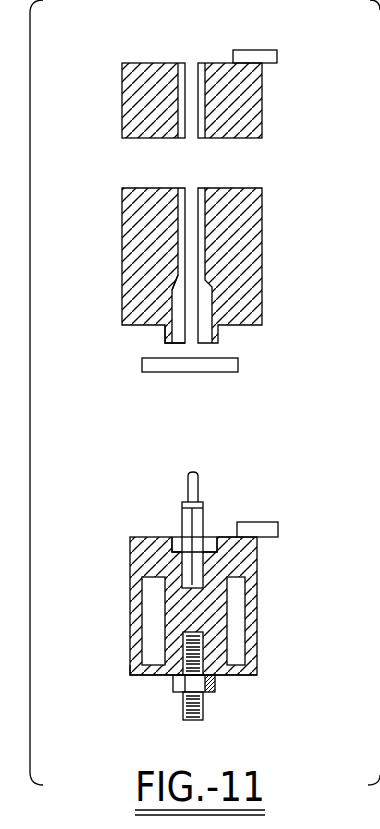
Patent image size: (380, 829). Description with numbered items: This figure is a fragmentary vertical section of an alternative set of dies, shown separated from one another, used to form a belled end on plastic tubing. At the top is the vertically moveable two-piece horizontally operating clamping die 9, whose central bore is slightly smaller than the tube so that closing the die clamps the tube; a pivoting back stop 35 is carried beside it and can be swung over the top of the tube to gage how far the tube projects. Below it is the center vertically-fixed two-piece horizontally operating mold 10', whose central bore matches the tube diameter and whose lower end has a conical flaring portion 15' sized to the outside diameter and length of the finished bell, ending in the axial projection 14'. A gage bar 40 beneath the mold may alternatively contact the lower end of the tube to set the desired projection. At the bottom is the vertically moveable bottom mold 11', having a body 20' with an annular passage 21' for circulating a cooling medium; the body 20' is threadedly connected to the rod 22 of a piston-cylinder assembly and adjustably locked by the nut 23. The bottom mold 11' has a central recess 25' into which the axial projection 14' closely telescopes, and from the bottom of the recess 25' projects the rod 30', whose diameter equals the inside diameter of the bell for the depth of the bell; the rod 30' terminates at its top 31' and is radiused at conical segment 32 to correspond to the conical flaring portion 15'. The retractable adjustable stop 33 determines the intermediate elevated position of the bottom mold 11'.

The clamping die 9 is at (122, 97).
The back stop 35 is at (267, 50).
The center mold 10' is at (152, 265).
The conical flaring portion 15' is at (129, 292).
The axial projection 14' is at (132, 338).
The gage bar 40 is at (238, 363).
The bottom mold 11' is at (151, 606).
The annular passage 21' is at (164, 621).
The body 20' is at (170, 687).
The rod 22 is at (203, 708).
The nut 23 is at (173, 688).
The central recess 25' is at (243, 511).
The rod 30' is at (163, 538).
The top of rod 31' is at (162, 475).
The conical segment 32 is at (211, 533).
The retractable adjustable stop 33 is at (267, 522).